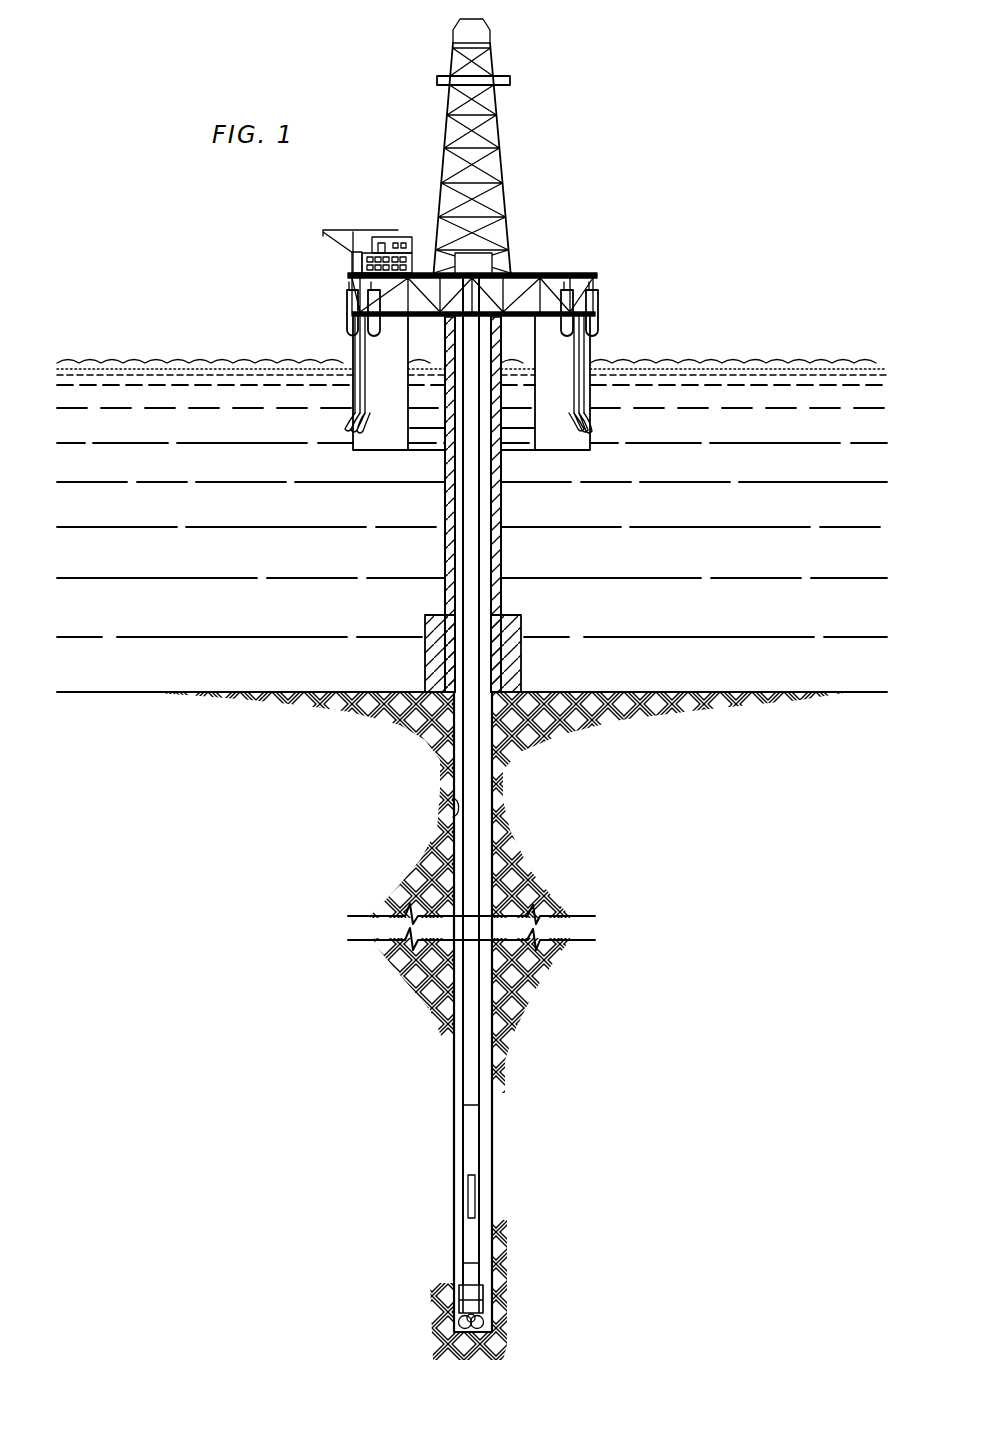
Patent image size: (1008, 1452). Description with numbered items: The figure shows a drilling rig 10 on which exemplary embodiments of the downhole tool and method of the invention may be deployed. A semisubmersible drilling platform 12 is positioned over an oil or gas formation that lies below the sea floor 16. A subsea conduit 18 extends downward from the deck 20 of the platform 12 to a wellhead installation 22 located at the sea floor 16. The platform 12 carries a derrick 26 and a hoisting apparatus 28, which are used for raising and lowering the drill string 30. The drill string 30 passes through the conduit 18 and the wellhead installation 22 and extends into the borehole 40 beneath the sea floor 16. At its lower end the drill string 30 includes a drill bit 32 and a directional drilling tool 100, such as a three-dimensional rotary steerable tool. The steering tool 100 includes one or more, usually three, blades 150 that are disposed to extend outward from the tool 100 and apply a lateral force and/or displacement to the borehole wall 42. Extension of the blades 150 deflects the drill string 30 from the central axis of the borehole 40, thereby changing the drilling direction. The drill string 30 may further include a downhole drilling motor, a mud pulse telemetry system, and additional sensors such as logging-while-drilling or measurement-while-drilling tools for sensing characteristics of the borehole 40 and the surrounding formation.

The drilling rig 10 is at (577, 155).
The semisubmersible drilling platform 12 is at (583, 277).
The sea floor 16 is at (755, 691).
The subsea conduit 18 is at (500, 551).
The deck 20 is at (550, 318).
The wellhead installation 22 is at (505, 615).
The derrick 26 is at (487, 250).
The hoisting apparatus 28 is at (495, 62).
The drill string 30 is at (472, 487).
The drill bit 32 is at (486, 1321).
The borehole 40 is at (483, 817).
The borehole wall 42 is at (453, 805).
The directional drilling tool 100 is at (463, 1152).
The blades 150 is at (468, 1200).